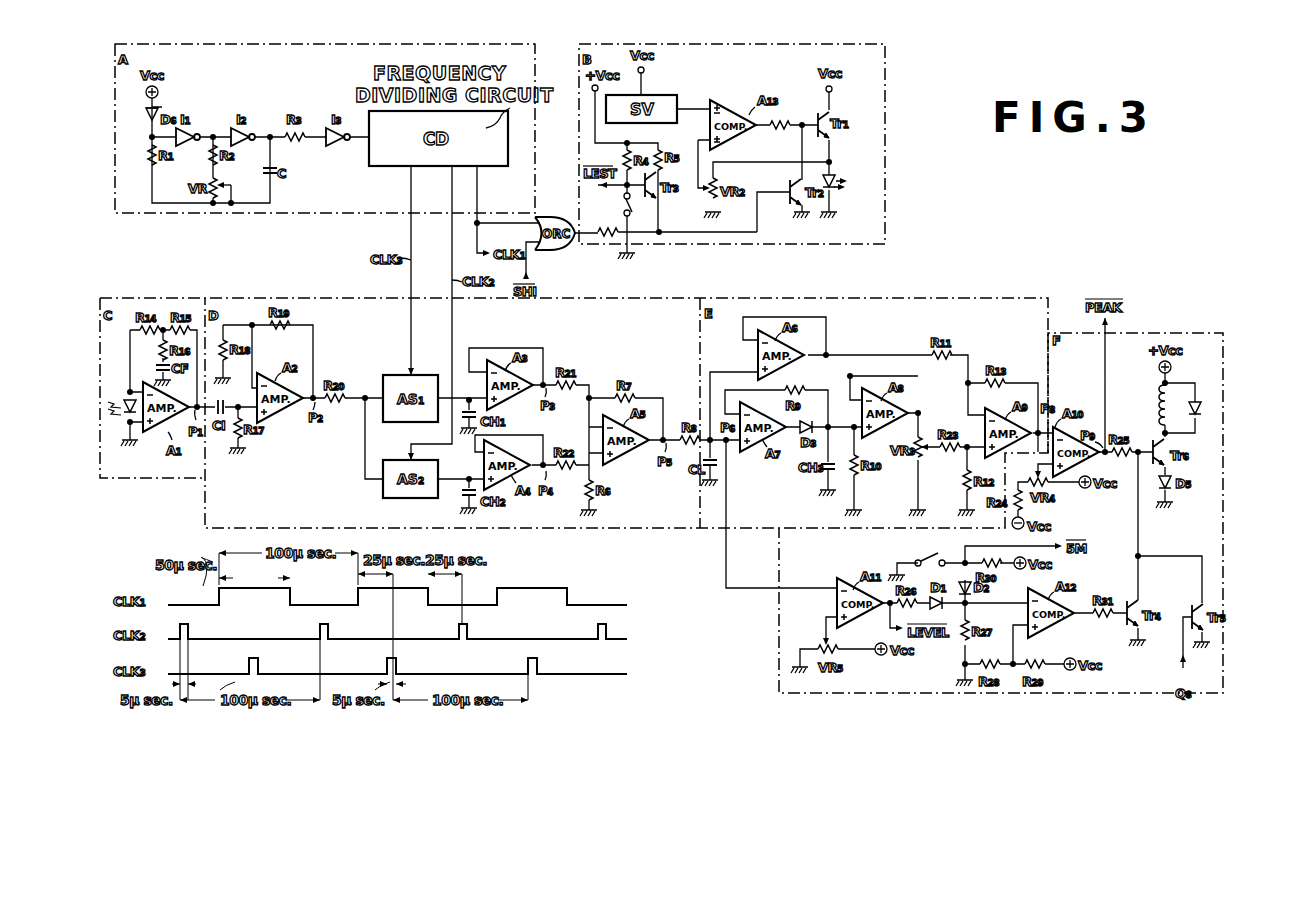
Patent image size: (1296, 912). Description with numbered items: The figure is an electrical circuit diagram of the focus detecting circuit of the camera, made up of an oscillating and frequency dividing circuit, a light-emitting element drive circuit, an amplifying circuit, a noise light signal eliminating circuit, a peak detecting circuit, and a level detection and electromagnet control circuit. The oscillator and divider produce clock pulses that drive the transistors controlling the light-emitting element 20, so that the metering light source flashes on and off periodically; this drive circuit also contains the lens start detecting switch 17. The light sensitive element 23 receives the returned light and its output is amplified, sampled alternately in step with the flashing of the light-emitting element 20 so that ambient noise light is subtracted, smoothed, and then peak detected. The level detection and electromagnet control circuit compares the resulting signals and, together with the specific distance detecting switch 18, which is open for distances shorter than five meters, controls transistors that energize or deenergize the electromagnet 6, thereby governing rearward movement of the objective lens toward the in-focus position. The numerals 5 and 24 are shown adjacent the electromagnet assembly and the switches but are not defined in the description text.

The electromagnetic drive unit 5 is at (1199, 400).
The electromagnet 6 is at (1164, 412).
The lens start detecting switch 17 is at (626, 207).
The specific distance detecting switch 18 is at (933, 547).
The light-emitting element 20 is at (834, 180).
The light sensitive element 23 is at (121, 417).
The switch actuating member 24 is at (622, 197).